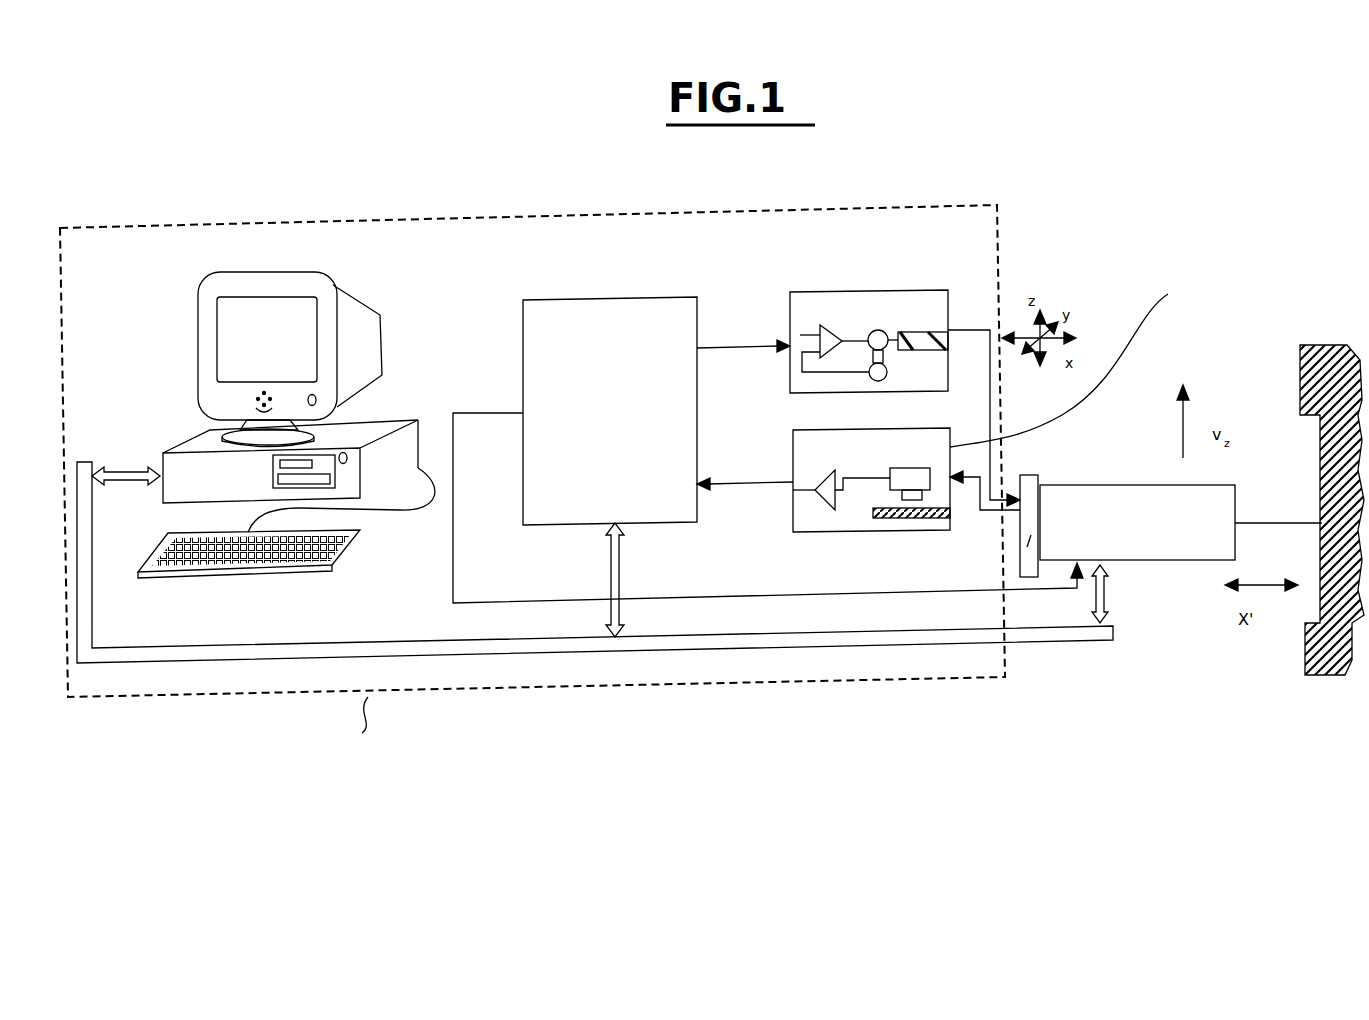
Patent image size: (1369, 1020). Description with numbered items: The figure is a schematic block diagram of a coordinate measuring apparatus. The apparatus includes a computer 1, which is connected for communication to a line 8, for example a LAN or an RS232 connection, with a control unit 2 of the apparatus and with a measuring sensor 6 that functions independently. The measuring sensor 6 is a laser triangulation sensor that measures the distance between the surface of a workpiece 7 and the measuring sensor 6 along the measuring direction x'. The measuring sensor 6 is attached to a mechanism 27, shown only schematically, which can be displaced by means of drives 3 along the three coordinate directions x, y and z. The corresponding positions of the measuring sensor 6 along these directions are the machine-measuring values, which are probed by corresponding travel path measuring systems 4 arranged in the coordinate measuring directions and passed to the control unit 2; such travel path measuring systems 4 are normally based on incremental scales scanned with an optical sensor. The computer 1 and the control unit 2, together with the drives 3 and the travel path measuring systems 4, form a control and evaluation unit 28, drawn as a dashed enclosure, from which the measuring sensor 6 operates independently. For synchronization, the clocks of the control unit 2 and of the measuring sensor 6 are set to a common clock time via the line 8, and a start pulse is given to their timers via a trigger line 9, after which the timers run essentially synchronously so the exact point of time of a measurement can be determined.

The computer 1 is at (207, 430).
The control unit 2 is at (670, 525).
The drives 3 is at (790, 312).
The travel path measuring systems 4 is at (820, 518).
The measuring sensor 6 is at (1160, 552).
The workpiece 7 is at (1350, 672).
The line 8 is at (958, 641).
The trigger line 9 is at (453, 600).
The mechanism 27 is at (1027, 546).
The control and evaluation unit 28 is at (600, 686).